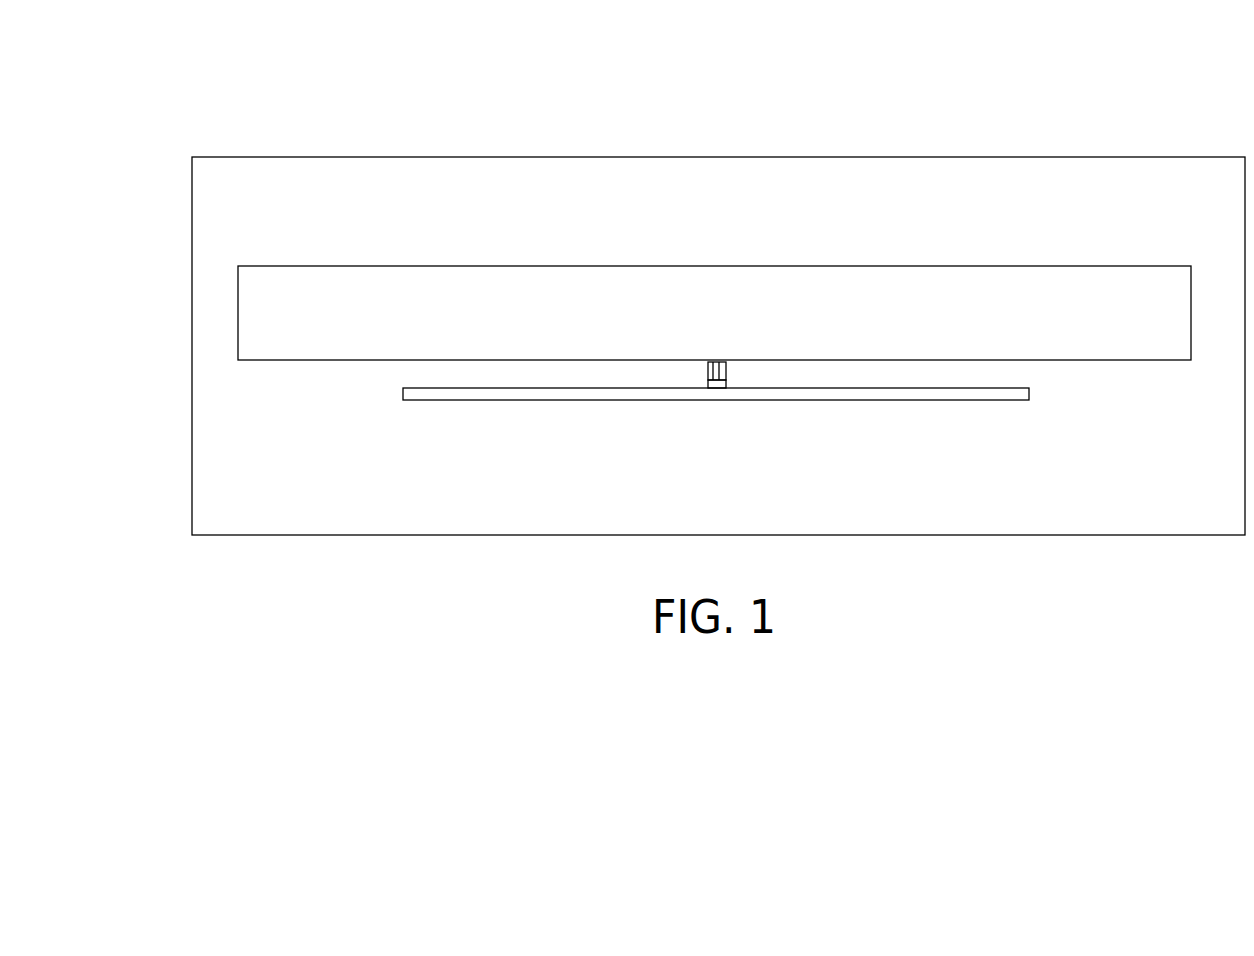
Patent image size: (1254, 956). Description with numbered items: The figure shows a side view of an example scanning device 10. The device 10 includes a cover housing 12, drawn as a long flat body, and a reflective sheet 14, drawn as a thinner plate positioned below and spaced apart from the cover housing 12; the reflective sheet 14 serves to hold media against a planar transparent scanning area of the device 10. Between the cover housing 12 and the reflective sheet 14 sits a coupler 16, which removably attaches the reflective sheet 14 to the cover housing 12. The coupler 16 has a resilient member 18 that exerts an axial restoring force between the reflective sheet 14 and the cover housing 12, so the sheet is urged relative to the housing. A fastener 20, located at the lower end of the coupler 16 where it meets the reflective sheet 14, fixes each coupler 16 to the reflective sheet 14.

The device 10 is at (477, 77).
The cover housing 12 is at (707, 266).
The reflective sheet 14 is at (403, 392).
The coupler 16 is at (716, 362).
The resilient member 18 is at (726, 379).
The fastener 20 is at (708, 383).